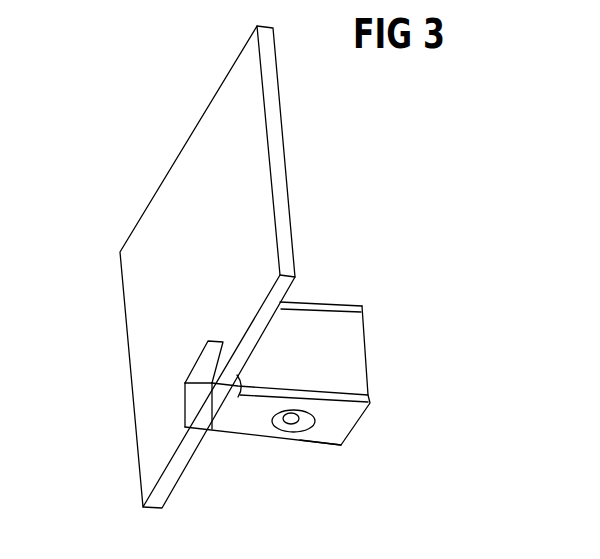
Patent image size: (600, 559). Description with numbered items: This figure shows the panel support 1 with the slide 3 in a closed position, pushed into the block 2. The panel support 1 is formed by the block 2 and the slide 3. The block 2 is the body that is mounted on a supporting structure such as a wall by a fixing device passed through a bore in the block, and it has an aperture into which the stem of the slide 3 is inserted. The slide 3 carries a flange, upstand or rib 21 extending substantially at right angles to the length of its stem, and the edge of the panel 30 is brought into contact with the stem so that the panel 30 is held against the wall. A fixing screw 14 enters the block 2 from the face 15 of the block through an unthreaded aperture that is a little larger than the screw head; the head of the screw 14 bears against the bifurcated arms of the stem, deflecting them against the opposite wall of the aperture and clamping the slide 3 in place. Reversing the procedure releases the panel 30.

The panel 30 is at (282, 125).
The panel support 1 is at (330, 303).
The block 2 is at (357, 427).
The flange, upstand or rib 21 is at (187, 388).
The slide 3 is at (208, 420).
The screw 14 is at (297, 420).
The face of the block 15 is at (332, 440).